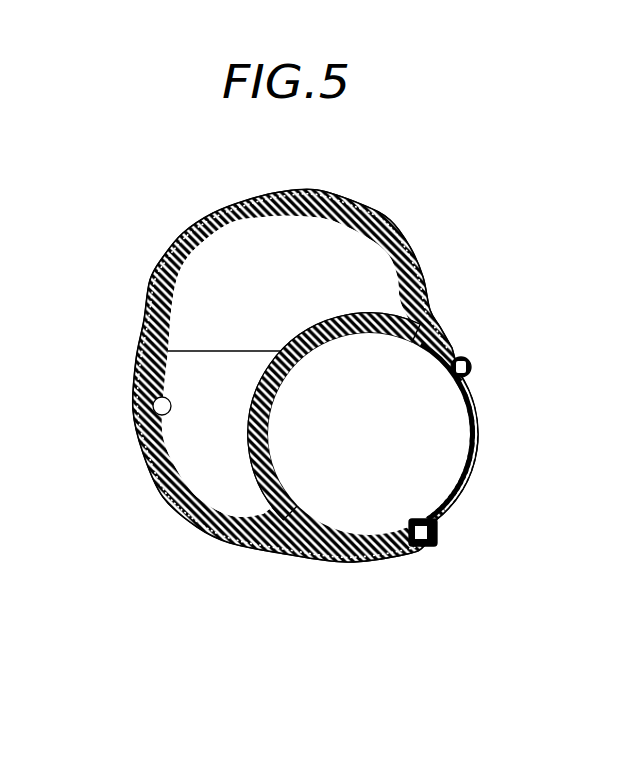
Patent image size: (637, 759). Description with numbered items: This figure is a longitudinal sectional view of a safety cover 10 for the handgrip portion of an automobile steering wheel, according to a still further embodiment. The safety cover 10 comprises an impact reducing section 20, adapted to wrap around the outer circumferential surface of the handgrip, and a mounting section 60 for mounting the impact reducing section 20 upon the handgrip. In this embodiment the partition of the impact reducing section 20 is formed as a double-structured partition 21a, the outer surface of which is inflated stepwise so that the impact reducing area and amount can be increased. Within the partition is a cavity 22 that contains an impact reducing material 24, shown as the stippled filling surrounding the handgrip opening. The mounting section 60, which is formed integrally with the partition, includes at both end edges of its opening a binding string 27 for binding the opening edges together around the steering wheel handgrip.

The safety cover 10 is at (208, 216).
The impact reducing section 20 is at (380, 214).
The double-structured partition 21a is at (147, 280).
The cavity 22 is at (133, 422).
The impact reducing material 24 is at (363, 287).
The binding string 27 is at (440, 522).
The mounting section 60 is at (343, 562).